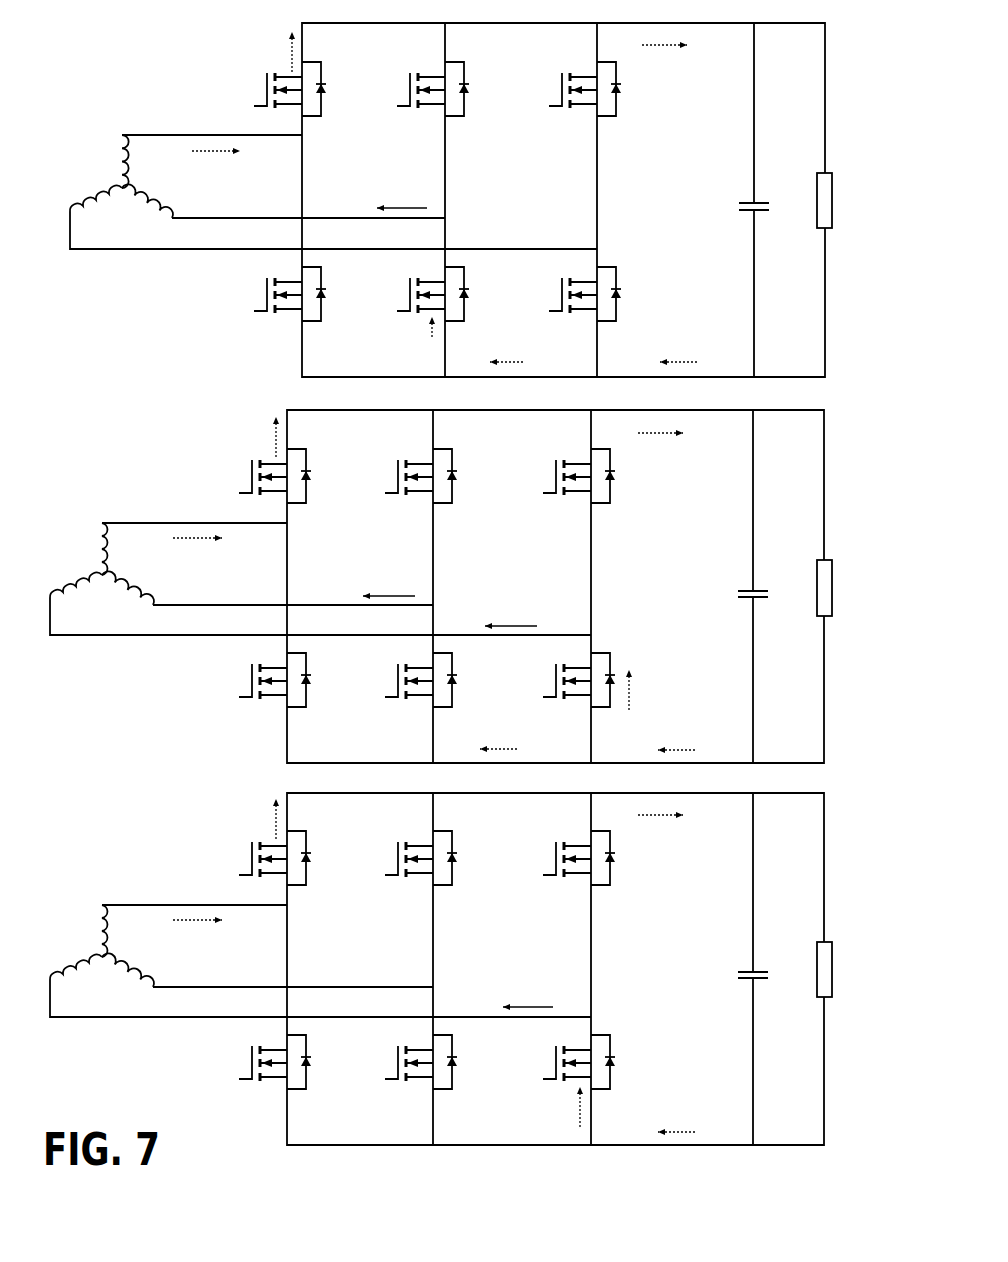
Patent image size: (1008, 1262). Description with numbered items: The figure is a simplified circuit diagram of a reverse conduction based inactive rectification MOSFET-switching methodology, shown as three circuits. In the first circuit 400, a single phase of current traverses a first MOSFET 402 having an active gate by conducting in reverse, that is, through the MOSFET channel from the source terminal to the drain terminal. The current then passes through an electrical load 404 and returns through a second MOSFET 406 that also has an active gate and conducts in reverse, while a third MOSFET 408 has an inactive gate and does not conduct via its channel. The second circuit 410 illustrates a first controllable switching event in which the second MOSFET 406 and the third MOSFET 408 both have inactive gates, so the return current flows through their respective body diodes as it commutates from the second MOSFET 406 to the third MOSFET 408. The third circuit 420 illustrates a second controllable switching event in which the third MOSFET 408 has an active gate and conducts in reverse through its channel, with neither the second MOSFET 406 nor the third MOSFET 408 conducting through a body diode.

The first circuit 400 is at (885, 97).
The first MOSFET 402 is at (258, 87).
The electrical load 404 is at (840, 208).
The second MOSFET 406 is at (473, 311).
The third MOSFET 408 is at (629, 272).
The second circuit 410 is at (879, 470).
The third circuit 420 is at (879, 875).